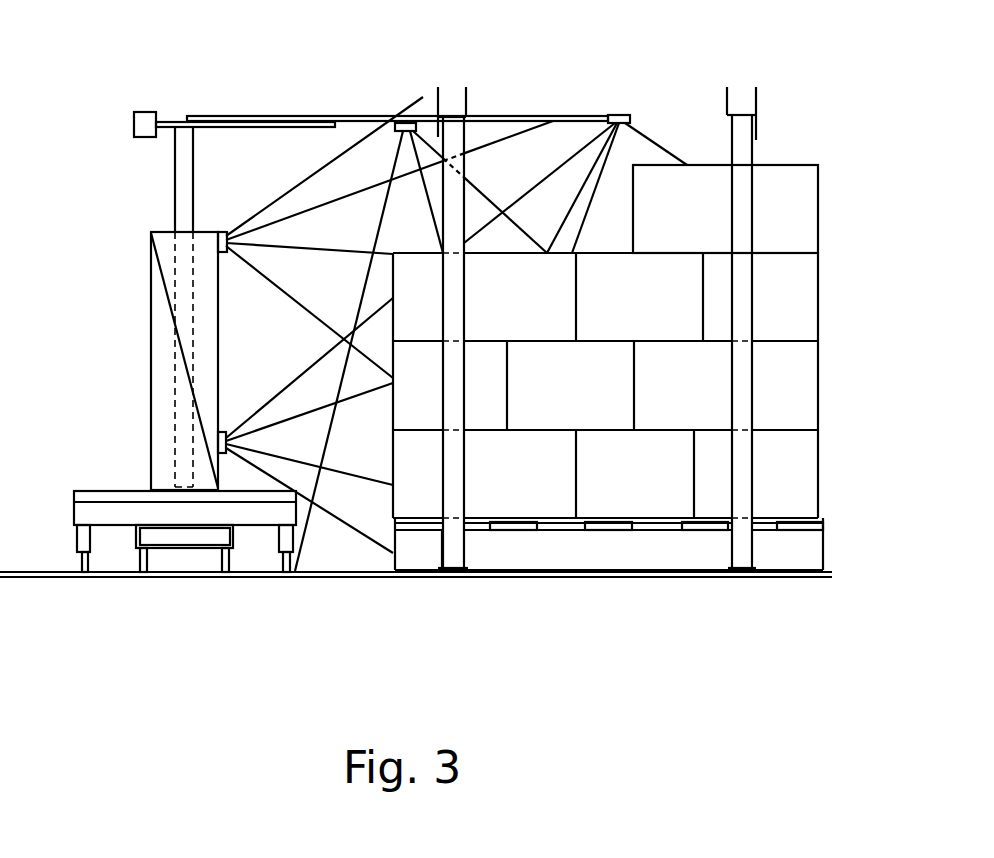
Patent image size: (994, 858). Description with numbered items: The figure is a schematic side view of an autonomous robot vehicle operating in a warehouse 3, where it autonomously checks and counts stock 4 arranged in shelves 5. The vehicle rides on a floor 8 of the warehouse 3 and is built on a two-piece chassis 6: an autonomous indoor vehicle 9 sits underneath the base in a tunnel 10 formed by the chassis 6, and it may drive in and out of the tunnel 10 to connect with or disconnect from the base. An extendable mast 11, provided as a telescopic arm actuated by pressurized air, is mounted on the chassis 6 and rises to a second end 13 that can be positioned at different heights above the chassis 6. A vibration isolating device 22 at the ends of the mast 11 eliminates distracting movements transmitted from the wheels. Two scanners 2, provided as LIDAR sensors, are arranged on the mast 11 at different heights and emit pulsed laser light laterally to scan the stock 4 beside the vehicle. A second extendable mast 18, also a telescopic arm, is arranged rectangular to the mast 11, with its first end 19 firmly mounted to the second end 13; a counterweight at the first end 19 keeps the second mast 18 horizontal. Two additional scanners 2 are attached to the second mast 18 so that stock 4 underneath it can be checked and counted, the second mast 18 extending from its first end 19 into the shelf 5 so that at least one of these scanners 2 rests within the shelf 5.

The scanner 2 is at (398, 124).
The warehouse 3 is at (20, 548).
The stock 4 is at (788, 385).
The shelf 5 is at (740, 150).
The chassis 6 is at (108, 518).
The floor 8 is at (372, 578).
The autonomous indoor vehicle 9 is at (187, 538).
The tunnel 10 is at (257, 540).
The extendable mast 11 is at (182, 163).
The second end 13 is at (234, 72).
The second extendable mast 18 is at (278, 115).
The first end 19 is at (234, 72).
The vibration isolating device 22 is at (183, 118).